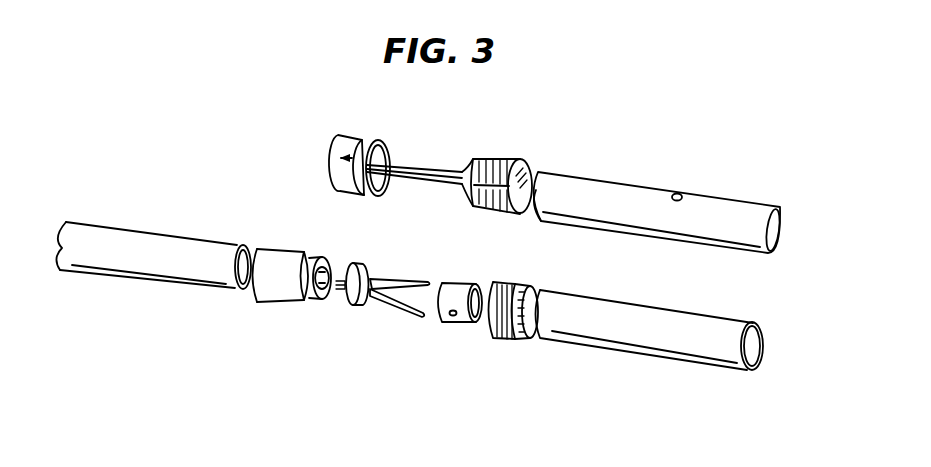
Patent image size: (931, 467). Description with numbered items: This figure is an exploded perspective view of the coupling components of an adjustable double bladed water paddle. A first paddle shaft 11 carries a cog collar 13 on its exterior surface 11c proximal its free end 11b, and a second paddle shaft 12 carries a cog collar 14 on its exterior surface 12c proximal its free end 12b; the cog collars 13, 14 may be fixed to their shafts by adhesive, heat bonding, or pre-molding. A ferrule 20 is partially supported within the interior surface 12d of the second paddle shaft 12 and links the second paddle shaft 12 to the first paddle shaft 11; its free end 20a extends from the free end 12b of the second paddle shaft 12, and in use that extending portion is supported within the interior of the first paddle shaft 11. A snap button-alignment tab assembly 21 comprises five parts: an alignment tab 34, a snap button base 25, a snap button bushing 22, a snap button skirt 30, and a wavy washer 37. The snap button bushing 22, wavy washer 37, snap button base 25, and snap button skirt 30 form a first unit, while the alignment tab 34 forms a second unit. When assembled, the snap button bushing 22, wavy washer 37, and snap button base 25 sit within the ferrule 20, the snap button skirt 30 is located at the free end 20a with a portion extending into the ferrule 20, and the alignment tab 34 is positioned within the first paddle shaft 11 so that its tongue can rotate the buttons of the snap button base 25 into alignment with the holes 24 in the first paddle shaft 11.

The first paddle shaft 11 is at (654, 207).
The free end of first paddle shaft 11b is at (532, 216).
The exterior surface of first paddle shaft 11c is at (610, 213).
The second paddle shaft 12 is at (152, 269).
The free end of second paddle shaft 12b is at (246, 289).
The exterior surface of second paddle shaft 12c is at (118, 269).
The interior surface of second paddle shaft 12d is at (236, 248).
The cog collar 13 is at (358, 135).
The cog collar 14 is at (495, 336).
The ferrule 20 is at (650, 361).
The free end of ferrule 20a is at (762, 358).
The snap button-alignment tab assembly 21 is at (282, 188).
The snap button bushing 22 is at (282, 280).
The holes 24 is at (681, 195).
The snap button base 25 is at (355, 306).
The snap button skirt 30 is at (462, 283).
The alignment tab 34 is at (503, 153).
The wavy washer 37 is at (325, 300).